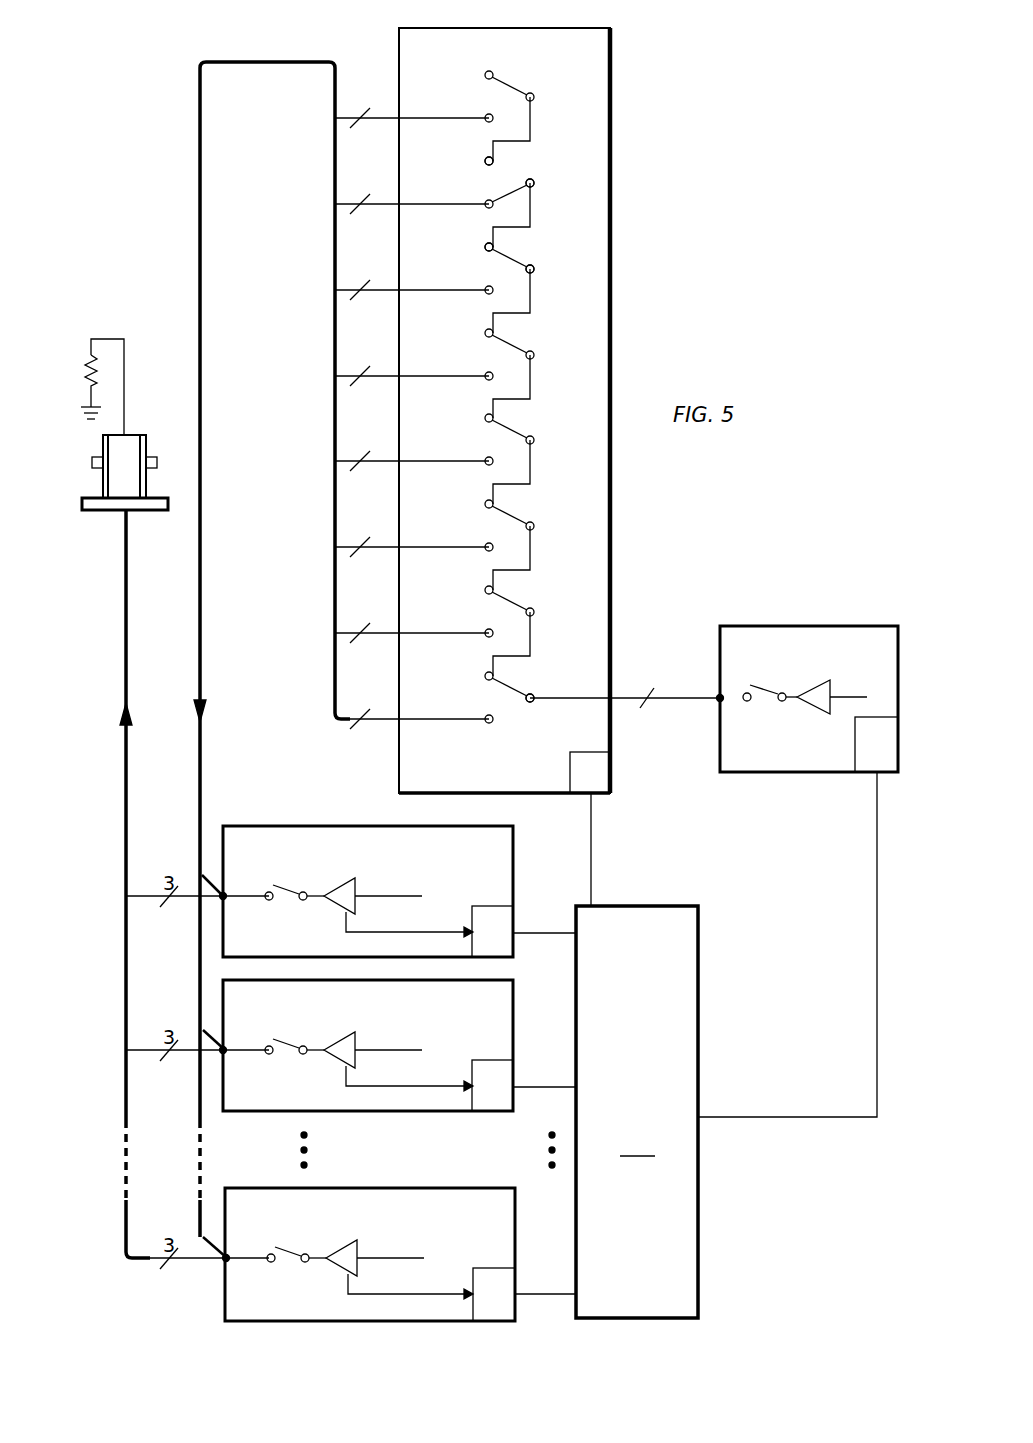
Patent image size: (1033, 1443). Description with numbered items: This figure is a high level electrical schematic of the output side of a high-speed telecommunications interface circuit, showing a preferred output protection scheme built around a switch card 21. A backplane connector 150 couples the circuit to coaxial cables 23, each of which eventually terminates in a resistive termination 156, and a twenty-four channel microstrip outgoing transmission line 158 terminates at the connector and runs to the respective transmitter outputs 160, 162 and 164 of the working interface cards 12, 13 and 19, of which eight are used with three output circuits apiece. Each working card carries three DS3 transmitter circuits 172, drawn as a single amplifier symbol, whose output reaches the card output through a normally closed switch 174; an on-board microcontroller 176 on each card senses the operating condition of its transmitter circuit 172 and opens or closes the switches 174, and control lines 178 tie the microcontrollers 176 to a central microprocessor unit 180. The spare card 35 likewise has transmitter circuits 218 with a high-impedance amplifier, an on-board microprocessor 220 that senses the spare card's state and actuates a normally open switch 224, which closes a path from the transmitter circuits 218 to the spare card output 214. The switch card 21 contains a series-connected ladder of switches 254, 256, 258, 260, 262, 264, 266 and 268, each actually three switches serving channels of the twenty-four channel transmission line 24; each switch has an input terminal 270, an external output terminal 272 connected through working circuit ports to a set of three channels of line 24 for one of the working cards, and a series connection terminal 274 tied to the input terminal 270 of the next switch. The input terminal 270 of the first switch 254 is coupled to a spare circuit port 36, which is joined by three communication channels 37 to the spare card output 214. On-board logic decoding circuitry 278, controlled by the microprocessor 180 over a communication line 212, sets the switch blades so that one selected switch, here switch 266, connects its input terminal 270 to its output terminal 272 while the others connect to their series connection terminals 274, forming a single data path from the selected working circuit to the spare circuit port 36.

The working interface card 12 is at (258, 826).
The working interface card 13 is at (272, 1114).
The working interface card 19 is at (270, 1324).
The switch card 21 is at (612, 92).
The coaxial cable 23 is at (108, 338).
The transmission line 24 is at (294, 48).
The spare card 35 is at (780, 774).
The spare circuit port 36 is at (614, 692).
The communication channels 37 is at (690, 692).
The backplane connector 150 is at (130, 434).
The resistive termination 156 is at (90, 362).
The outgoing transmission line 158 is at (124, 596).
The transmitter output 160 is at (226, 896).
The transmitter output 162 is at (228, 1050).
The transmitter output 164 is at (230, 1258).
The DS3 transmitter circuit 172 is at (360, 886).
The normally closed switch 174 is at (290, 904).
The on-board microcontroller 176 is at (515, 910).
The control line 178 is at (540, 936).
The central microprocessor unit 180 is at (638, 1112).
The communication line 212 is at (592, 860).
The spare card output 214 is at (718, 702).
The transmitter circuit 218 is at (810, 680).
The on-board microprocessor 220 is at (866, 774).
The normally open switch 224 is at (764, 704).
The switch 254 is at (489, 700).
The switch 256 is at (484, 611).
The switch 258 is at (484, 527).
The switch 260 is at (484, 442).
The switch 262 is at (484, 360).
The switch 264 is at (483, 273).
The switch 266 is at (483, 183).
The switch 268 is at (483, 98).
The input terminal 270 is at (533, 181).
The external output terminal 272 is at (496, 208).
The series connection terminal 274 is at (483, 162).
The logic decoding circuitry 278 is at (610, 786).